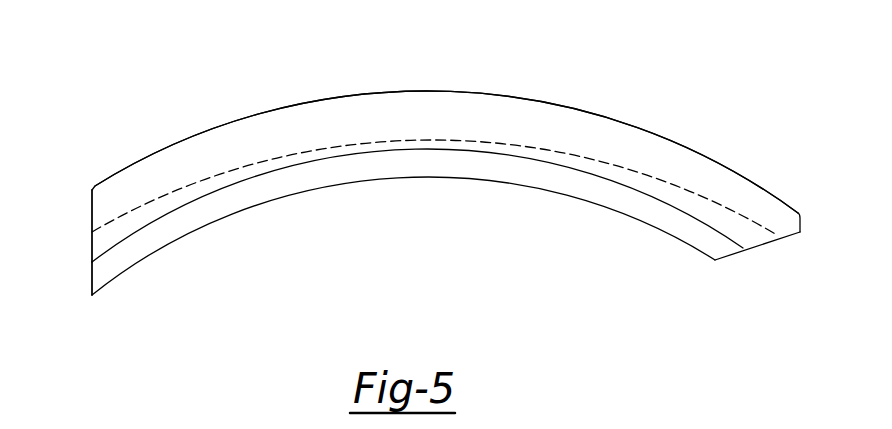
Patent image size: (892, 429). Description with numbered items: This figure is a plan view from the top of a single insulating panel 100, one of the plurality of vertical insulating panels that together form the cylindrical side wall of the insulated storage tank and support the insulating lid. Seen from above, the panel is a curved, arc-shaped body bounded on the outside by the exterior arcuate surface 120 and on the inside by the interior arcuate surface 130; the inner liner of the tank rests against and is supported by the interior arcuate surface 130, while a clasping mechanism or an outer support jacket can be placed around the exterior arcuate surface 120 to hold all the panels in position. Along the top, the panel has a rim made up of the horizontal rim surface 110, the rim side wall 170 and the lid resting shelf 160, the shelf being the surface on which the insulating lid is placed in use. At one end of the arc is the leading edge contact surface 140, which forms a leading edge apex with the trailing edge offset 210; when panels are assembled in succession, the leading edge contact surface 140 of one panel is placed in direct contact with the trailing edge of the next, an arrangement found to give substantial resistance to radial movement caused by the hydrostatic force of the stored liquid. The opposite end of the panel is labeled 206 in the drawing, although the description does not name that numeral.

The insulating panel 100 is at (654, 90).
The horizontal rim surface 110 is at (313, 118).
The exterior arcuate surface 120 is at (518, 96).
The interior arcuate surface 130 is at (502, 183).
The leading edge contact surface 140 is at (757, 247).
The lid resting shelf 160 is at (575, 190).
The rim side wall 170 is at (327, 160).
The first end 206 is at (92, 246).
The trailing edge offset 210 is at (800, 223).